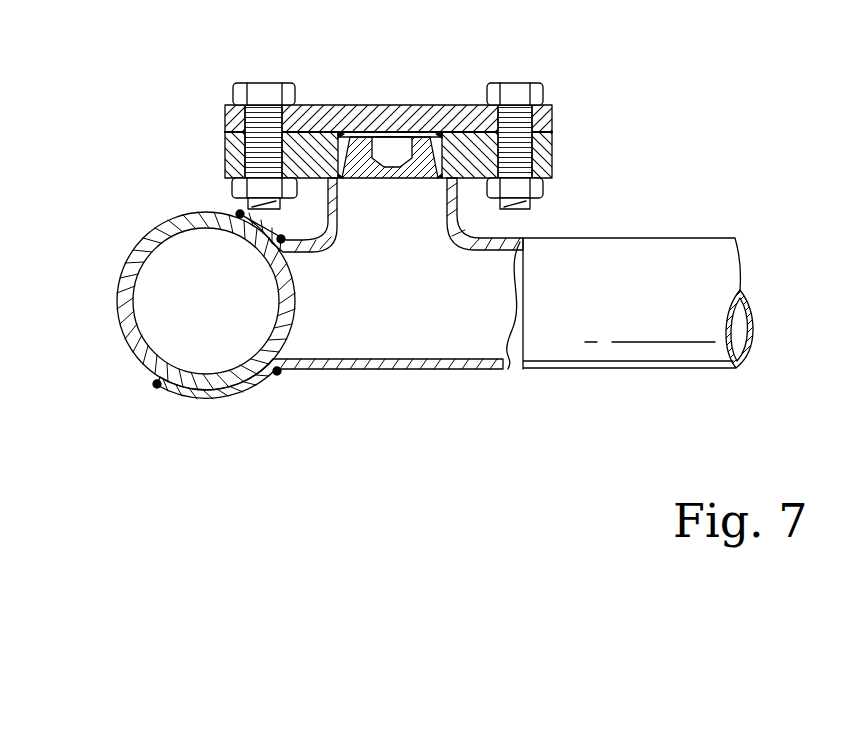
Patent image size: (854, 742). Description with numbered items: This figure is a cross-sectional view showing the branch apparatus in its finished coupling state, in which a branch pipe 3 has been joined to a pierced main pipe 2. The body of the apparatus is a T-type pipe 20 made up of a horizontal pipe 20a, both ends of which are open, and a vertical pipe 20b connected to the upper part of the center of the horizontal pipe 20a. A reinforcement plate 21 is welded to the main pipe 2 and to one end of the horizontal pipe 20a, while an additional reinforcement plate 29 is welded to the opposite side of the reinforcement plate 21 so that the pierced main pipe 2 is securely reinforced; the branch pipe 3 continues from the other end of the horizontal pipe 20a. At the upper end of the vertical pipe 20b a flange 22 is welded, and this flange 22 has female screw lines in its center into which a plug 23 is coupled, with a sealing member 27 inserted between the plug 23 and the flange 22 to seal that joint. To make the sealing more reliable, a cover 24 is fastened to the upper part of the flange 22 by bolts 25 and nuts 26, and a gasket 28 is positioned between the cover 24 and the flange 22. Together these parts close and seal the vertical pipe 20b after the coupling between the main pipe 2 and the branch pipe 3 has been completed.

The main pipe 2 is at (172, 392).
The branch pipe 3 is at (640, 350).
The T-type pipe 20 is at (455, 373).
The horizontal pipe 20a is at (362, 372).
The vertical pipe 20b is at (463, 228).
The reinforcement plate 21 is at (232, 392).
The flange 22 is at (538, 160).
The plug 23 is at (392, 131).
The cover 24 is at (360, 108).
The bolts 25 is at (268, 90).
The nuts 26 is at (236, 190).
The sealing member 27 is at (505, 108).
The gasket 28 is at (452, 132).
The additional reinforcement plate 29 is at (118, 326).